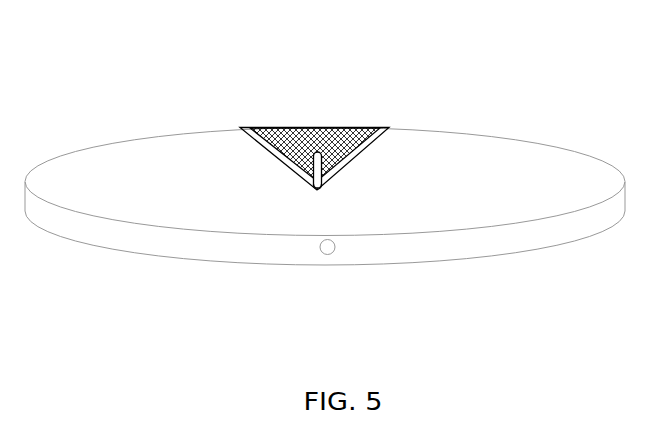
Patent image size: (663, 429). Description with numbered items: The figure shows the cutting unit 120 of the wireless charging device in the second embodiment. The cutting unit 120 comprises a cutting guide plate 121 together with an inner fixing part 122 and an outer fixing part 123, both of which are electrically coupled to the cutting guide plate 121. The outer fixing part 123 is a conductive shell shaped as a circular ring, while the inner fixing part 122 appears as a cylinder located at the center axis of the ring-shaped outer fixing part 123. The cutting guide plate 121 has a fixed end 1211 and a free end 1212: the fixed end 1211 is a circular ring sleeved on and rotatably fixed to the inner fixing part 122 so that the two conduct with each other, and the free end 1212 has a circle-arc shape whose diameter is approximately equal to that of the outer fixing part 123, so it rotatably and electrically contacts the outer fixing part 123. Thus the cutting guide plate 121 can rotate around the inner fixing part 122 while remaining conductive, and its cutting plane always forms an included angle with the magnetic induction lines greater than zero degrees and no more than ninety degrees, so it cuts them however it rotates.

The cutting unit 120 is at (48, 57).
The cutting guide plate 121 is at (298, 126).
The free end 1212 is at (383, 128).
The inner fixing part 122 is at (320, 168).
The fixed end 1211 is at (317, 190).
The outer fixing part 123 is at (73, 222).